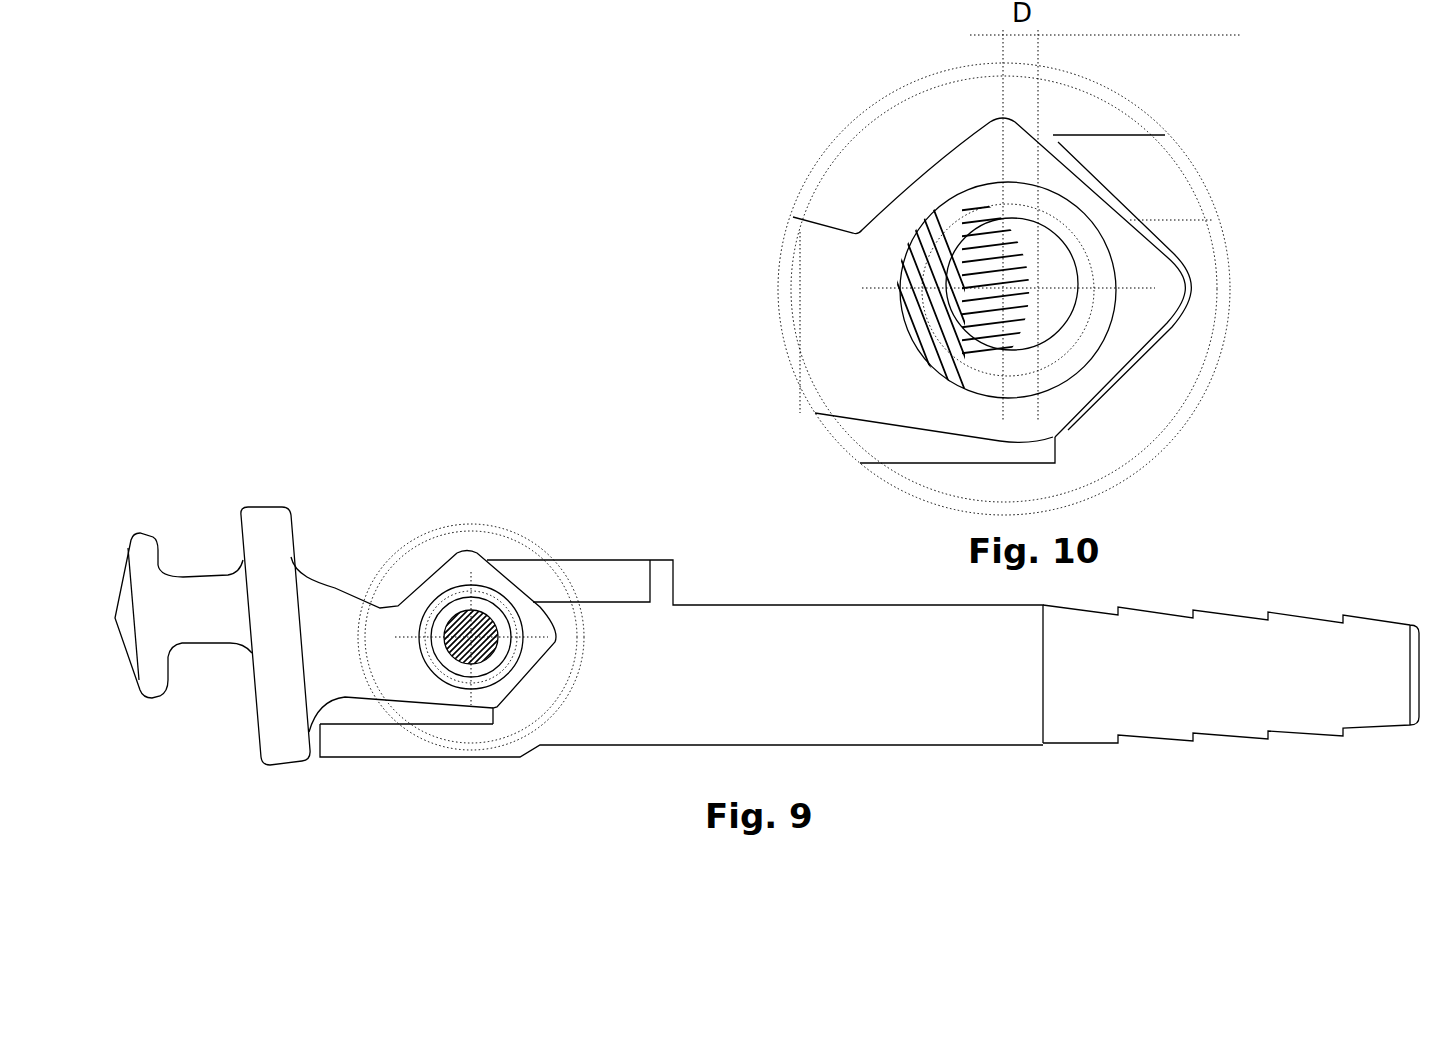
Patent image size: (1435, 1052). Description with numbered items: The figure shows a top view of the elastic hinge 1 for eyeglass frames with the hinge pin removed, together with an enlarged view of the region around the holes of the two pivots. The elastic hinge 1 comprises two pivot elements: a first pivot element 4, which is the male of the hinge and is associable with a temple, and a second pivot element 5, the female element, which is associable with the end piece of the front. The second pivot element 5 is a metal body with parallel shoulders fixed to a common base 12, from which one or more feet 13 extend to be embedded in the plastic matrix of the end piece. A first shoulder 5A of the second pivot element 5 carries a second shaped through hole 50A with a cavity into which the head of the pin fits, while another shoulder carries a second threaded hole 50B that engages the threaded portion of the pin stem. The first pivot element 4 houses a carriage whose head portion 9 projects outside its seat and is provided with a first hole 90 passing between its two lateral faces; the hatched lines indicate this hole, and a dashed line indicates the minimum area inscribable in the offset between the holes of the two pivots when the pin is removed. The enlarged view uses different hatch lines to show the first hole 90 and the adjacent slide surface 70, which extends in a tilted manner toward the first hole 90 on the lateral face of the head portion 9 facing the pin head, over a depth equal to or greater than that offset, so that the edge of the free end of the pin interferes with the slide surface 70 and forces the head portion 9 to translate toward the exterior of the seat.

In FIG. 9, the elastic hinge 1 is at (570, 380).
In FIG. 9, the first pivot element 4 is at (755, 543).
In FIG. 9, the second pivot element 5 is at (240, 486).
In FIG. 9, the first shoulder 5A is at (333, 618).
In FIG. 10, the first shoulder 5A is at (830, 262).
In FIG. 9, the head portion 9 is at (432, 690).
In FIG. 10, the head portion 9 is at (880, 500).
In FIG. 9, the common base 12 is at (264, 537).
In FIG. 9, the feet 13 is at (188, 597).
In FIG. 9, the second shaped through hole 50A is at (455, 590).
In FIG. 10, the second shaped through hole 50A is at (940, 200).
In FIG. 9, the second threaded hole 50B is at (447, 617).
In FIG. 10, the second threaded hole 50B is at (1050, 337).
In FIG. 10, the slide surface 70 is at (1027, 172).
In FIG. 9, the first hole 90 is at (490, 617).
In FIG. 10, the first hole 90 is at (1045, 236).